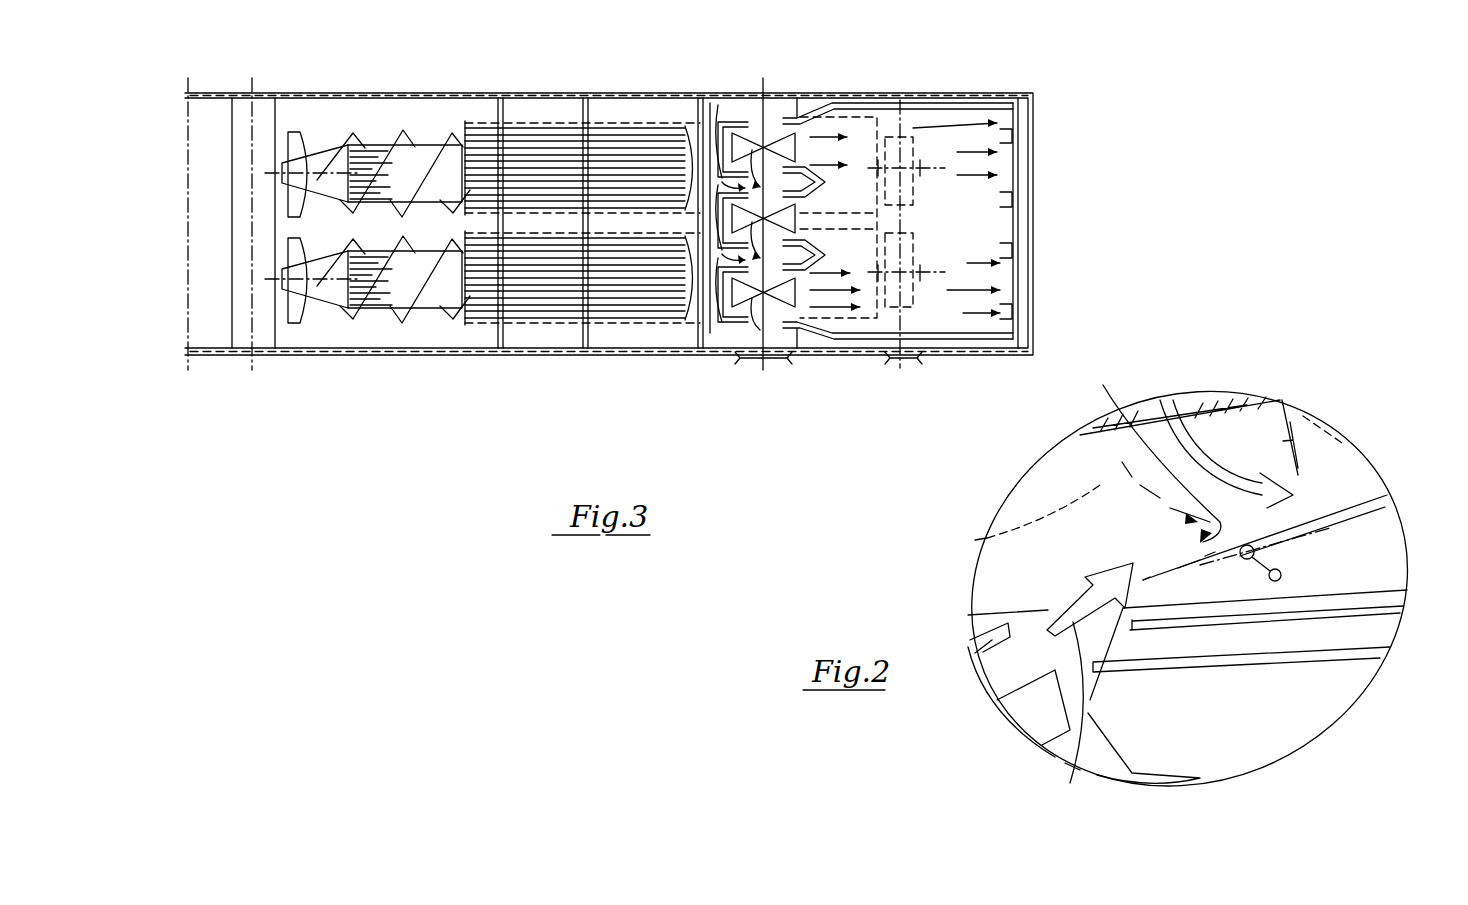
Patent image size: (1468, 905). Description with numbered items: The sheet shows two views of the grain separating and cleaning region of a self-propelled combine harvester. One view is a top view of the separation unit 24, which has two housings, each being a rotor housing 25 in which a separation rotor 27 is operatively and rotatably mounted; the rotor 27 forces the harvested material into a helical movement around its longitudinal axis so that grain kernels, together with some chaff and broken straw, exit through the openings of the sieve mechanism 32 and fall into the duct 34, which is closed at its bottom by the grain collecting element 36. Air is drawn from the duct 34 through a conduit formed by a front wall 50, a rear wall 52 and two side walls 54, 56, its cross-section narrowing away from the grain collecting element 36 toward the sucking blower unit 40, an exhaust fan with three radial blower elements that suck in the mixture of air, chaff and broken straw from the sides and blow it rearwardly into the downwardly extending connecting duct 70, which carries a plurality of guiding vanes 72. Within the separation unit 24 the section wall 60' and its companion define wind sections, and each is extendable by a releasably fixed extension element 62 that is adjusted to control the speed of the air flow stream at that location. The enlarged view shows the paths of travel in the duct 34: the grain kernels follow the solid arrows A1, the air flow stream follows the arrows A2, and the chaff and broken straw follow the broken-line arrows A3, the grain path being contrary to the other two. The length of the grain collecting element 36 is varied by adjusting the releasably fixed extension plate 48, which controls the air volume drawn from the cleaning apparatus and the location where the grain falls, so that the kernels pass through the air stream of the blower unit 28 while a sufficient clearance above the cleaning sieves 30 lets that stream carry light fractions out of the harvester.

In FIG. 3, the separation unit 24 is at (482, 268).
In FIG. 3, the rotor housing 25 is at (463, 140).
In FIG. 3, the rotor 27 is at (297, 140).
In FIG. 3, the sucking blower unit 40 is at (790, 146).
In FIG. 3, the front wall 50 is at (693, 173).
In FIG. 3, the rear wall 52 is at (797, 100).
In FIG. 3, the side wall 54 is at (742, 96).
In FIG. 3, the side wall 56 is at (725, 350).
In FIG. 3, the section wall 60' is at (527, 178).
In FIG. 3, the connecting duct 70 is at (993, 225).
In FIG. 3, the guiding vanes 72 is at (1002, 118).
In FIG. 2, the blower unit 28 is at (1038, 688).
In FIG. 2, the cleaning sieves 30 is at (1270, 658).
In FIG. 2, the sieve mechanism 32 is at (1118, 422).
In FIG. 2, the duct 34 is at (1250, 457).
In FIG. 2, the grain collecting element 36 is at (1330, 517).
In FIG. 2, the extension plate 48 is at (1150, 565).
In FIG. 2, the extension element 62 is at (1300, 473).
In FIG. 2, the path of travel of the grain kernels A1 is at (1410, 465).
In FIG. 2, the path of travel of the air flow stream A2 is at (1170, 425).
In FIG. 2, the path of travel of the chaff and the broken straw A3 is at (956, 540).